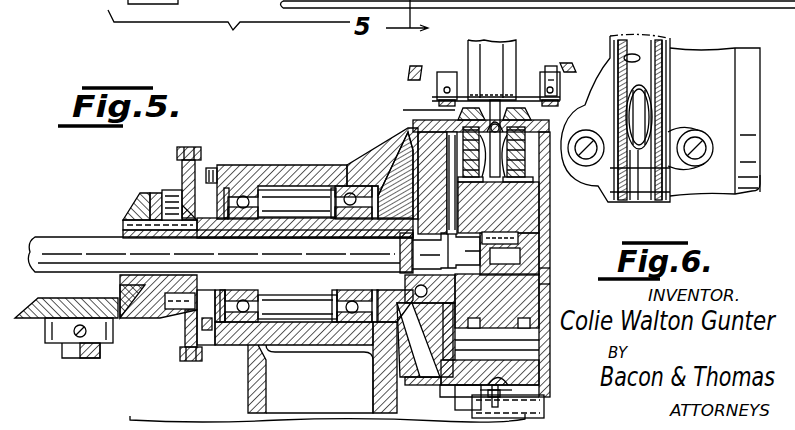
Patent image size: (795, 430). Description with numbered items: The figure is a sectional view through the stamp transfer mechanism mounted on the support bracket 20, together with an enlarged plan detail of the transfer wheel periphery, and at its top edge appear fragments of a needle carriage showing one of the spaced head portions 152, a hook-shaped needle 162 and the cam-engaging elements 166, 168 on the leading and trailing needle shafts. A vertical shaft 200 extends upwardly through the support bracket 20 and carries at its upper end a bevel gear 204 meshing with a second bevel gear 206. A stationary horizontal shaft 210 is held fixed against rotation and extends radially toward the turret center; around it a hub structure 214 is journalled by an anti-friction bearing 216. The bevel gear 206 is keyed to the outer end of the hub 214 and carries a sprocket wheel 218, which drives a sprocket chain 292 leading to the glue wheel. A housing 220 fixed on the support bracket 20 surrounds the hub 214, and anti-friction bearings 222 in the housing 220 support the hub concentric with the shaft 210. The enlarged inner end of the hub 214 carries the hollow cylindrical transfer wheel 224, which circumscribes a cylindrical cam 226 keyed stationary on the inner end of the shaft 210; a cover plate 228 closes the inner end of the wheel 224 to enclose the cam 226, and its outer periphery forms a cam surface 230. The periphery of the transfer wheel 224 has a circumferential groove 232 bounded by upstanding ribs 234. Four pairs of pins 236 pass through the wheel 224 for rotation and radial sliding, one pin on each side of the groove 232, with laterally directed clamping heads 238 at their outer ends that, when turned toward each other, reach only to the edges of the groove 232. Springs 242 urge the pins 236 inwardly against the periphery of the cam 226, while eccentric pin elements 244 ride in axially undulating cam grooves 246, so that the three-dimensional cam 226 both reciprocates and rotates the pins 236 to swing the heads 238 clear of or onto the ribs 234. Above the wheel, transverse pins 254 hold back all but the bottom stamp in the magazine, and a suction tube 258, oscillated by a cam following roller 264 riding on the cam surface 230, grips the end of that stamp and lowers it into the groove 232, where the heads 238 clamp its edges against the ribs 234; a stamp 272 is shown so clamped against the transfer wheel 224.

In FIG. 5, the support bracket 20 is at (176, 417).
In FIG. 5, the head portions 152 is at (540, 409).
In FIG. 5, the hook-shaped needles 162 is at (515, 392).
In FIG. 5, the cam-engaging element 166 is at (458, 396).
In FIG. 5, the cam-engaging element 168 is at (167, 10).
In FIG. 5, the vertical shaft 200 is at (58, 339).
In FIG. 5, the bevel gear 204 is at (126, 313).
In FIG. 5, the second bevel gear 206 is at (133, 206).
In FIG. 5, the stationary horizontal shaft 210 is at (50, 240).
In FIG. 5, the hub structure 214 is at (301, 202).
In FIG. 5, the anti-friction bearing 216 is at (268, 185).
In FIG. 5, the sprocket wheel 218 is at (200, 342).
In FIG. 5, the housing 220 is at (292, 170).
In FIG. 5, the anti-friction bearings 222 is at (346, 172).
In FIG. 5, the hollow cylindrical transfer wheel 224 is at (408, 126).
In FIG. 5, the cylindrical cam 226 is at (540, 275).
In FIG. 5, the cover plate 228 is at (540, 292).
In FIG. 6, the cover plate 228 is at (770, 178).
In FIG. 5, the cam surface 230 is at (547, 362).
In FIG. 6, the cam surface 230 is at (749, 58).
In FIG. 5, the circumferential groove 232 is at (488, 362).
In FIG. 6, the circumferential groove 232 is at (666, 190).
In FIG. 5, the upstanding ribs 234 is at (472, 372).
In FIG. 6, the upstanding ribs 234 is at (612, 72).
In FIG. 5, the pins 236 is at (437, 183).
In FIG. 6, the clamping heads 238 is at (603, 143).
In FIG. 5, the springs 242 is at (498, 170).
In FIG. 5, the pin elements 244 is at (550, 188).
In FIG. 5, the cam grooves 246 is at (525, 318).
In FIG. 5, the transverse pins 254 is at (418, 98).
In FIG. 5, the suction tube 258 is at (492, 70).
In FIG. 6, the suction tube 258 is at (656, 55).
In FIG. 5, the cam following roller 264 is at (551, 66).
In FIG. 5, the stamp 272 is at (488, 85).
In FIG. 6, the stamp 272 is at (634, 186).
In FIG. 5, the sprocket chain 292 is at (198, 156).